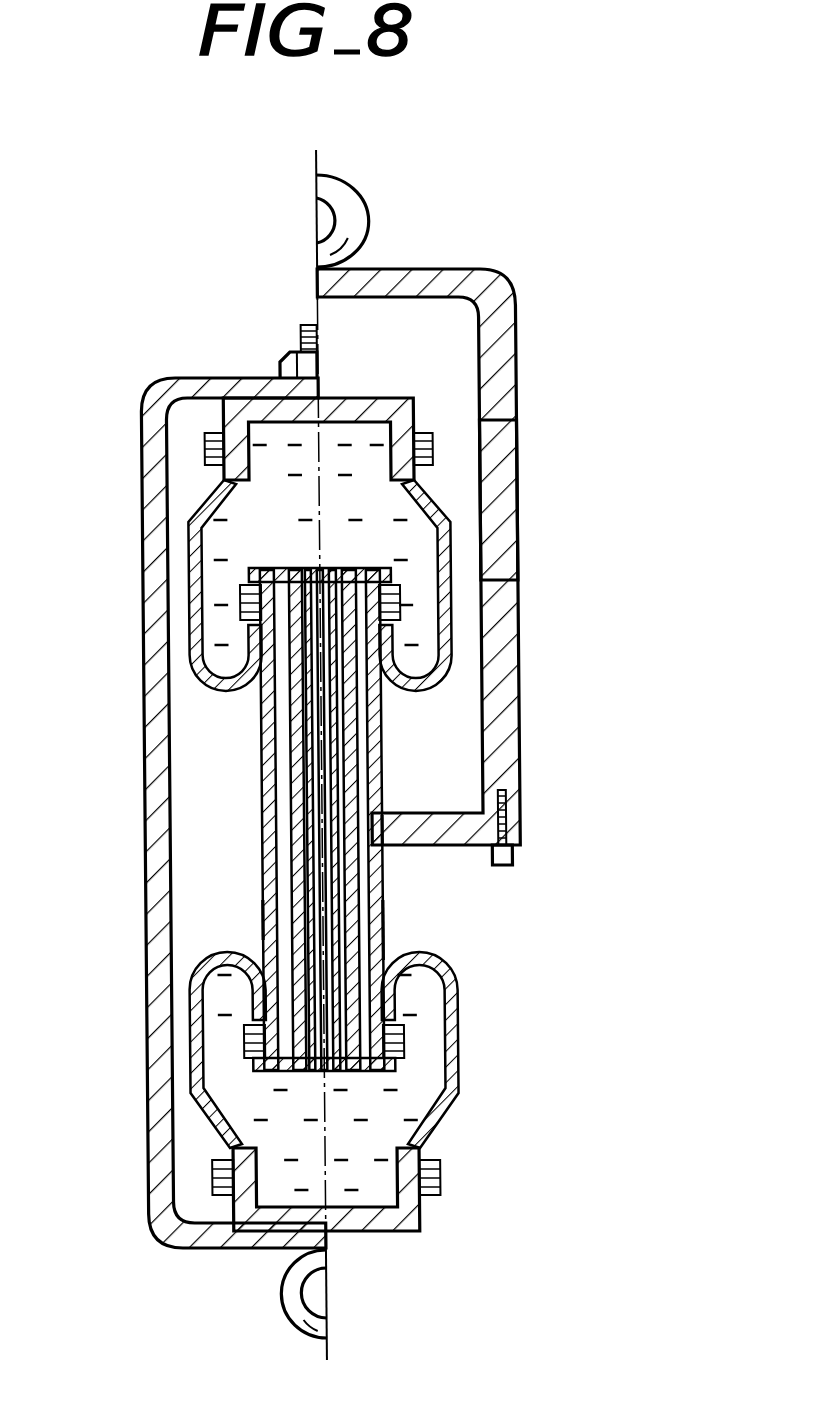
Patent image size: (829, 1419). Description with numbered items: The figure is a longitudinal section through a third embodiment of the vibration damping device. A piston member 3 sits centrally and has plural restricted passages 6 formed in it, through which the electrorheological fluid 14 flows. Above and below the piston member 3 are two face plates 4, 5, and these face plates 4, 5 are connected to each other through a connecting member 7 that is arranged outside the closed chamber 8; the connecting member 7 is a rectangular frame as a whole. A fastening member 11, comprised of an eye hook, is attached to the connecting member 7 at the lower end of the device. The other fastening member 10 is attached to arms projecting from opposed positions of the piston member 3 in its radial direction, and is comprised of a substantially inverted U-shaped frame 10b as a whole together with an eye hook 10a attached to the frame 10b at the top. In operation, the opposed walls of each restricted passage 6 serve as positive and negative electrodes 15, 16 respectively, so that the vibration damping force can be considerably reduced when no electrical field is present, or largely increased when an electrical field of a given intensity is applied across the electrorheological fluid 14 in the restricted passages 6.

The piston member 3 is at (394, 750).
The face plate 4 is at (368, 400).
The face plate 5 is at (348, 1217).
The restricted passage 6 is at (388, 852).
The connecting member 7 is at (156, 604).
The closed chamber 8 is at (291, 542).
The fastening member 10 is at (522, 357).
The eye hook 10a is at (372, 210).
The inverted U-shaped frame 10b is at (500, 490).
The fastening member 11 is at (278, 1300).
The electrorheological fluid 14 is at (216, 549).
The positive electrode 15 is at (263, 930).
The negative electrode 16 is at (398, 950).